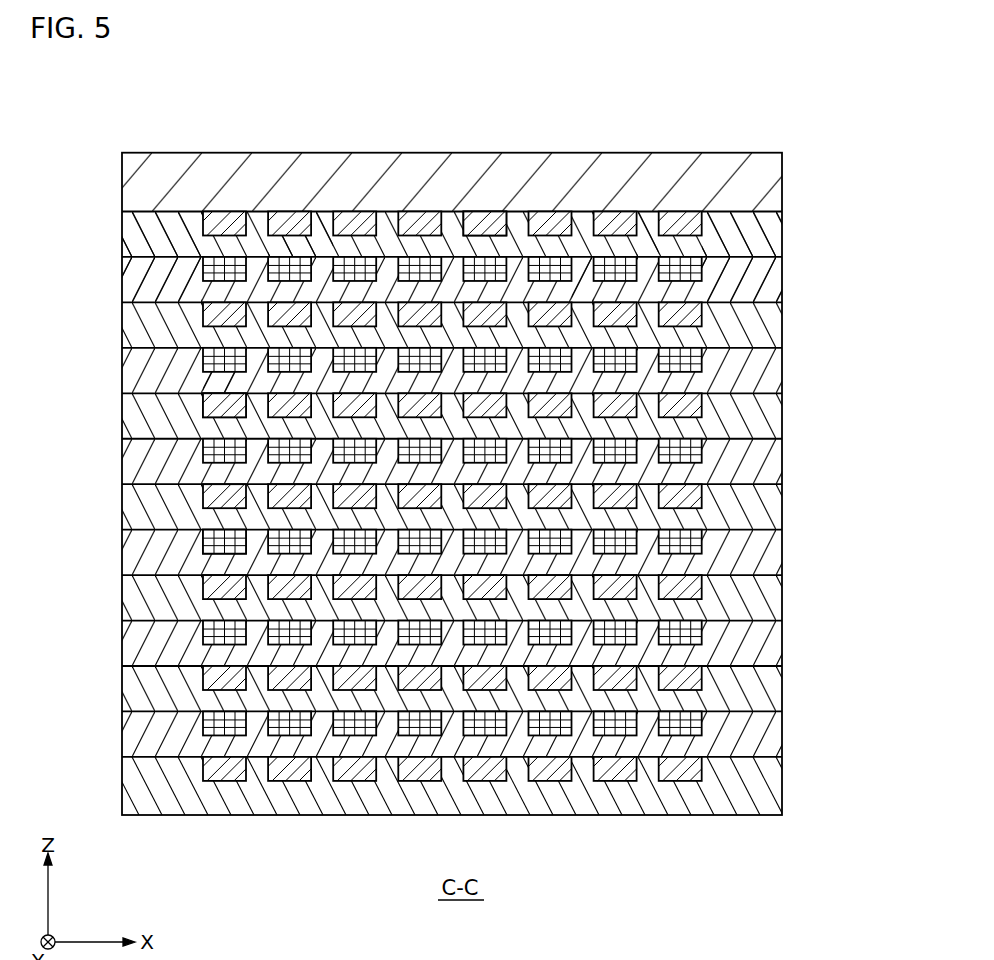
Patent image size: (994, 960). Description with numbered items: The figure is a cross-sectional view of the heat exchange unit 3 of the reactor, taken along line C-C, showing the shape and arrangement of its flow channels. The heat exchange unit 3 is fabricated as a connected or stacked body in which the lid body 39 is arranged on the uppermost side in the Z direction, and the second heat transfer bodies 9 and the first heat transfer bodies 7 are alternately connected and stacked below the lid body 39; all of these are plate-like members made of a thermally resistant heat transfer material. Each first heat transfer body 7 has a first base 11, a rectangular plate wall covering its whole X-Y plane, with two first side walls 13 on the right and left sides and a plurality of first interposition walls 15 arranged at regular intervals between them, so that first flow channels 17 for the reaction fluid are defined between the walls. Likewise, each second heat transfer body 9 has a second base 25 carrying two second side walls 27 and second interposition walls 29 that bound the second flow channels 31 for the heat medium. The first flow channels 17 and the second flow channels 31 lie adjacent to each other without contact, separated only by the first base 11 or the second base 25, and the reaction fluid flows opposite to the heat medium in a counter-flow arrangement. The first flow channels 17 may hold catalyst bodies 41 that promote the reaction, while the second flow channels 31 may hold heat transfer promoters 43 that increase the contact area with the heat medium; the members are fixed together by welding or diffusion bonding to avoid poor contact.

The heat exchange unit 3 is at (207, 153).
The first heat transfer body 7 is at (795, 291).
The second heat transfer body 9 is at (795, 227).
The first base 11 is at (225, 382).
The first side wall 13 is at (130, 267).
The first interposition wall 15 is at (320, 253).
The first flow channel 17 is at (577, 267).
The second base 25 is at (290, 247).
The second side wall 27 is at (167, 217).
The second interposition wall 29 is at (647, 212).
The second flow channel 31 is at (508, 217).
The lid body 39 is at (680, 158).
The catalyst body 41 is at (227, 543).
The heat transfer promoter 43 is at (227, 407).